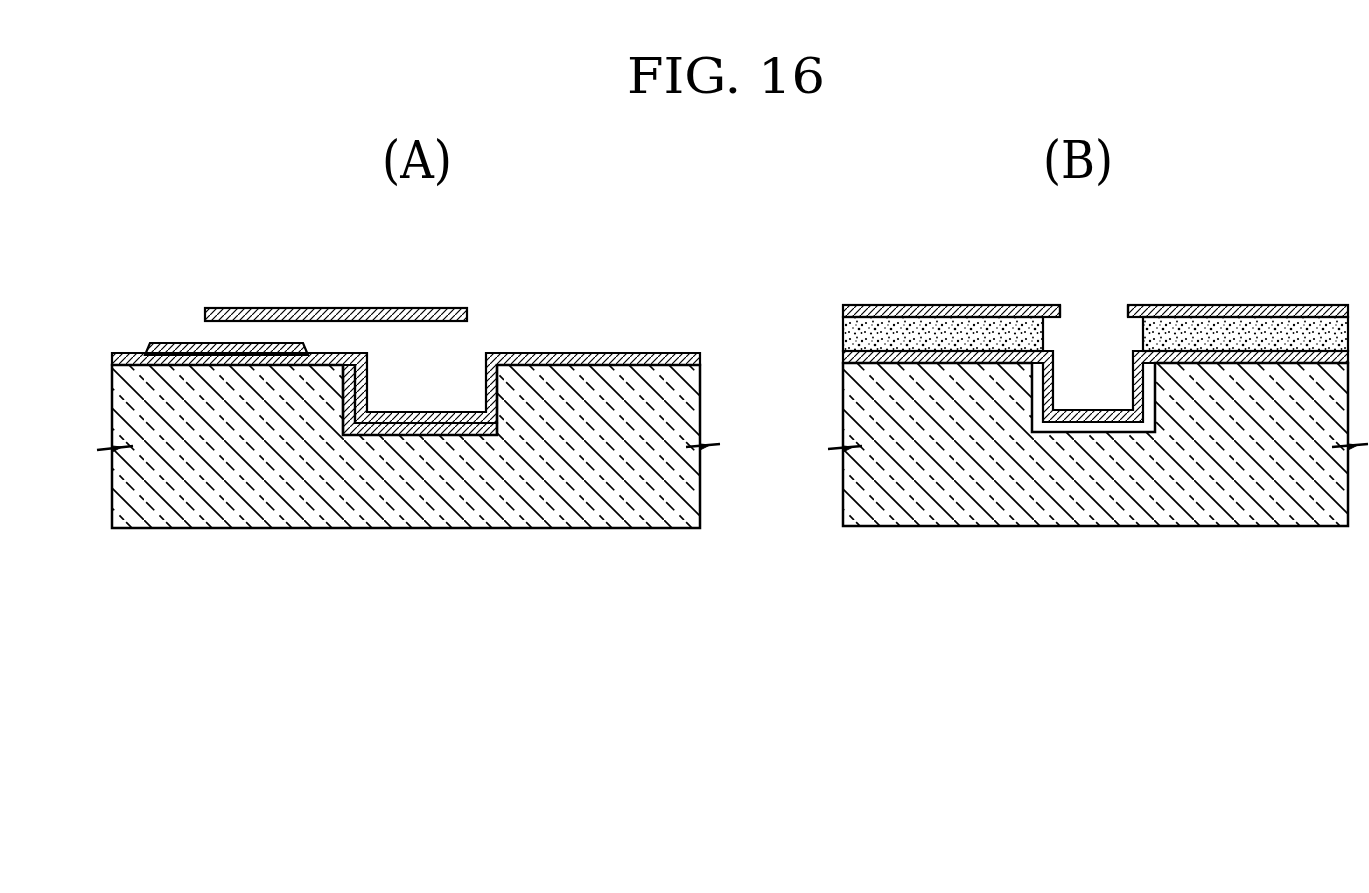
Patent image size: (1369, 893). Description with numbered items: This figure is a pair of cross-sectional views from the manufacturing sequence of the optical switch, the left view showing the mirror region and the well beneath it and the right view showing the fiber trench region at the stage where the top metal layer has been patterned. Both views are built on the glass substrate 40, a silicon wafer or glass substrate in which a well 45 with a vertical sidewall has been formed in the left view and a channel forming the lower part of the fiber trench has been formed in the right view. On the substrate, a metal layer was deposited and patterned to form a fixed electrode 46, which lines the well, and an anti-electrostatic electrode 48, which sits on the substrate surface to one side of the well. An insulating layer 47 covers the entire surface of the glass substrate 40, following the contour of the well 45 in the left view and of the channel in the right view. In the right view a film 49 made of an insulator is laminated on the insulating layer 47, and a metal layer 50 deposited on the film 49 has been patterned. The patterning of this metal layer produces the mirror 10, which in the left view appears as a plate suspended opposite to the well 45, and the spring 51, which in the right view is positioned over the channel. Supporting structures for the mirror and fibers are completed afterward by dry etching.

The mirror 10 is at (377, 308).
The glass substrate 40 is at (700, 401).
The well 45 is at (455, 385).
The fixed electrode 46 is at (420, 437).
The insulating layer 47 is at (555, 352).
The anti-electrostatic electrode 48 is at (177, 356).
The film 49 is at (842, 333).
The metal layer 50 is at (842, 312).
The spring 51 is at (1128, 305).